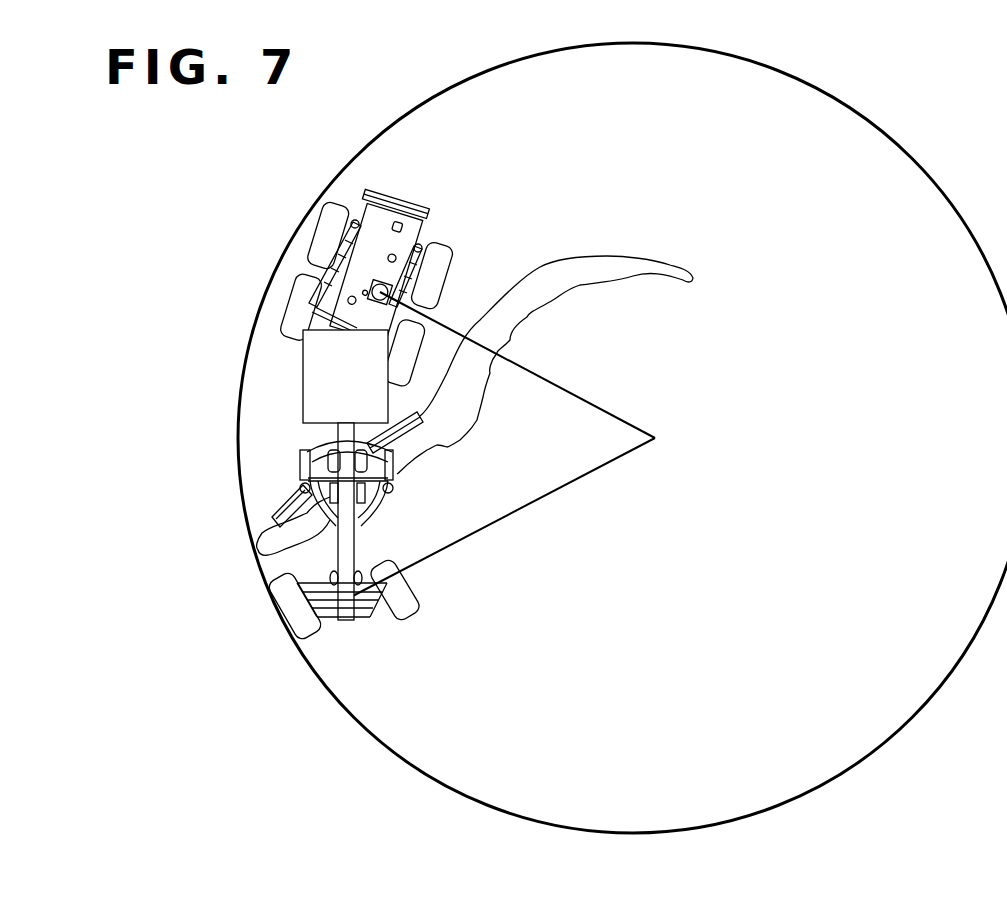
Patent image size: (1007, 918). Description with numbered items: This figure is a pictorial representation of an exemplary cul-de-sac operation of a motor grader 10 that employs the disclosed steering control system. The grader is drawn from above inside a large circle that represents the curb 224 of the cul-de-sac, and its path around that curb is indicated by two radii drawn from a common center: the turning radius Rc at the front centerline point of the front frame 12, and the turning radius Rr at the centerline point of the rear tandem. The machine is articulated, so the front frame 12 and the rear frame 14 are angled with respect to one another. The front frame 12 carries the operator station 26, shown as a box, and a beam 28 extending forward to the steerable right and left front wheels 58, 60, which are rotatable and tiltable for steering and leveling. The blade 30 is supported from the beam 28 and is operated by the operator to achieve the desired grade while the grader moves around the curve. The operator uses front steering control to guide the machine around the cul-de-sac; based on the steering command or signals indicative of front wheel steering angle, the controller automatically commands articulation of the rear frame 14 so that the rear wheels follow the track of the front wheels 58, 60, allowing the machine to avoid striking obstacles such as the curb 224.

The motor grader 10 is at (276, 371).
The front frame 12 is at (348, 546).
The rear frame 14 is at (301, 269).
The operator station 26 is at (357, 387).
The beam 28 is at (374, 540).
The blade 30 is at (303, 489).
The right front wheel 58 is at (313, 633).
The left front wheel 60 is at (421, 601).
The curb 224 is at (309, 673).
The turning radius at the rear tandem centerline point Rr is at (559, 387).
The turning radius at the front centerline point Rc is at (505, 519).